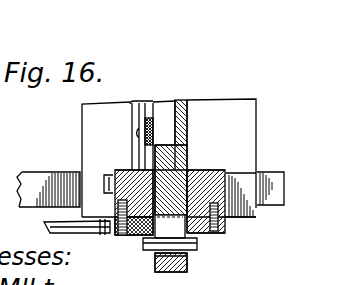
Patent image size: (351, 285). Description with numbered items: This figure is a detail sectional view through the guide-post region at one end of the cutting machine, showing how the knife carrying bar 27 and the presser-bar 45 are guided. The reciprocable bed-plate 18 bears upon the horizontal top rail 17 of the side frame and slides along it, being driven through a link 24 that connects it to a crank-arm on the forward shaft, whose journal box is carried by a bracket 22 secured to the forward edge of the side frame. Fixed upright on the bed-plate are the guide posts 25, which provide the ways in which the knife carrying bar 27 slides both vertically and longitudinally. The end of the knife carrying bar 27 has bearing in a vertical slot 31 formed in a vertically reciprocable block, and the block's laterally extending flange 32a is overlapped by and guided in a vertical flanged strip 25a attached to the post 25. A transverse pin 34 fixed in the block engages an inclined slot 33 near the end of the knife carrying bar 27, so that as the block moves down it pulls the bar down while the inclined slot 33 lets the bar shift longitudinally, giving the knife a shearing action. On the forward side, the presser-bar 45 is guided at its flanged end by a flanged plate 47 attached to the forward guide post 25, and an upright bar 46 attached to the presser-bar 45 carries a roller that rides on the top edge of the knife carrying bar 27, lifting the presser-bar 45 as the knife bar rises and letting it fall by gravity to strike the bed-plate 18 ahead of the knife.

The top bearing rail 17 is at (268, 171).
The reciprocable bed-plate 18 is at (104, 103).
The bracket 22 is at (52, 172).
The link 24 is at (45, 228).
The upright guide post 25 is at (210, 162).
The vertical flanged strip 25a is at (226, 229).
The knife carrying bar 27 is at (187, 121).
The vertical slot 31 is at (151, 257).
The lateral flange 32a is at (122, 236).
The inclined slot 33 is at (186, 264).
The transverse pin 34 is at (197, 248).
The presser-bar 45 is at (130, 102).
The upright bar 46 is at (152, 118).
The flanged plate 47 is at (108, 176).